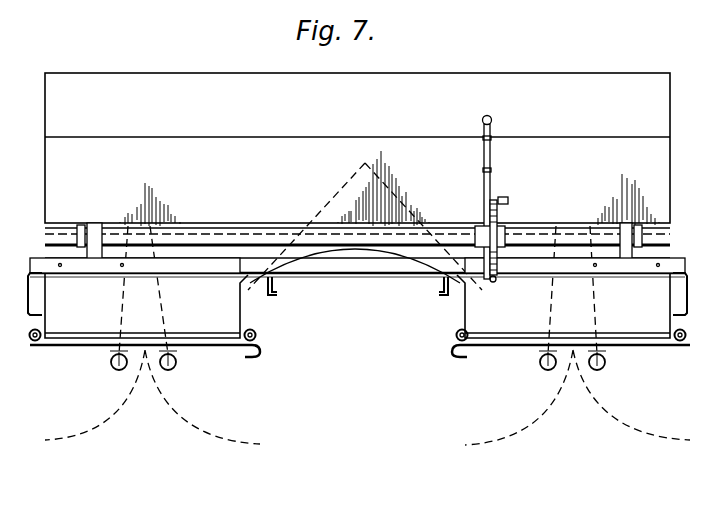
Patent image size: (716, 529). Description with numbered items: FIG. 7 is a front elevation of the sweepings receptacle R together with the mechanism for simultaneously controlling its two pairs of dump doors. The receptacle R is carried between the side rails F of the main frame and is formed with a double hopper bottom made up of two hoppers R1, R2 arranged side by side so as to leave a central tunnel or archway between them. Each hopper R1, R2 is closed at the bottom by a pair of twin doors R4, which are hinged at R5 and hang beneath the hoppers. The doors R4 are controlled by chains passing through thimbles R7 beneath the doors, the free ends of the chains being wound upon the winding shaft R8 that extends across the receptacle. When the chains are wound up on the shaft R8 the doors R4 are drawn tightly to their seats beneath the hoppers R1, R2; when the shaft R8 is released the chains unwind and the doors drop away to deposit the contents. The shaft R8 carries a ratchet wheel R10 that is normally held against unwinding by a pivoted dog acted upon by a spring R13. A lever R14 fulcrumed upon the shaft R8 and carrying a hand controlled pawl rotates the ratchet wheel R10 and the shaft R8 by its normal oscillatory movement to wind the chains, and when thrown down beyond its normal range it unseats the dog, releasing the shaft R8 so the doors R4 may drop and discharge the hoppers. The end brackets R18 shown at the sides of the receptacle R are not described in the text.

The sweepings receptacle R is at (357, 149).
The hopper R1 is at (146, 305).
The hopper R2 is at (563, 305).
The twin doors R4 is at (88, 366).
The hinge R5 is at (36, 345).
The thimble R7 is at (128, 366).
The winding shaft R8 is at (232, 235).
The ratchet wheel R10 is at (500, 208).
The spring R13 is at (440, 288).
The lever R14 is at (491, 156).
The end bar R18 is at (42, 262).
The side rails F is at (40, 296).